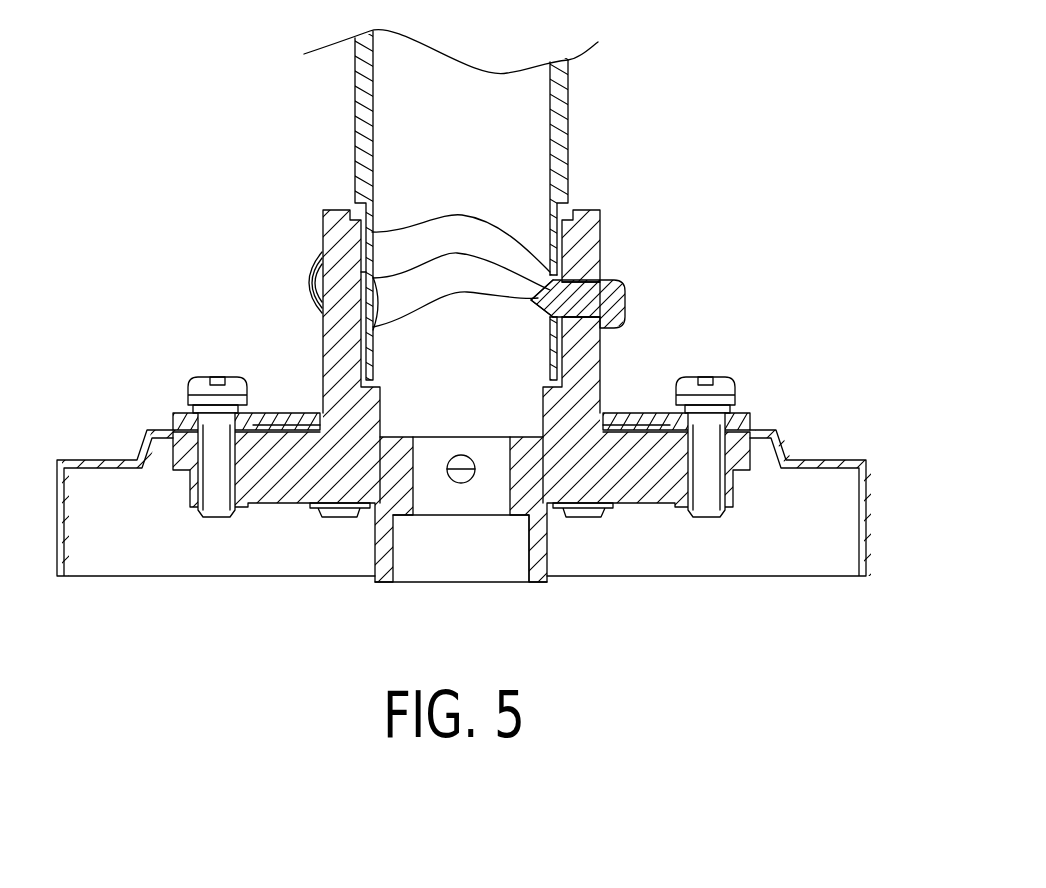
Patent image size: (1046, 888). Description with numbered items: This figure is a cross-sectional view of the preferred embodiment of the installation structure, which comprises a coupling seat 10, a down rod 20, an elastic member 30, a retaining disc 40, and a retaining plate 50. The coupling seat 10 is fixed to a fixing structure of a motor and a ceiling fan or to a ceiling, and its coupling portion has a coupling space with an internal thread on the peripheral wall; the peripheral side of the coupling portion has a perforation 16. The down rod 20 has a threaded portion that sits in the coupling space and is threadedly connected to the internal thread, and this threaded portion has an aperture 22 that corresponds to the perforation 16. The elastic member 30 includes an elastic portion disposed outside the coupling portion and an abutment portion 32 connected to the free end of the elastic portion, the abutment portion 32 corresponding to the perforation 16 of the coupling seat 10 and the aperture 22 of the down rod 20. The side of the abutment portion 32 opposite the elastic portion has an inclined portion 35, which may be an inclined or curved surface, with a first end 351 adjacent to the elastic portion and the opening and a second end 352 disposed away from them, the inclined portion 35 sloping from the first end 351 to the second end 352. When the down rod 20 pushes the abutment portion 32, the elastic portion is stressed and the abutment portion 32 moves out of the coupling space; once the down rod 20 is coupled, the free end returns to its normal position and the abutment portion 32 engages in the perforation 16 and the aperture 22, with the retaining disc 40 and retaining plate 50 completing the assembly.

The coupling seat 10 is at (610, 221).
The perforation 16 is at (582, 322).
The down rod 20 is at (575, 91).
The aperture 22 is at (565, 263).
The elastic member 30 is at (636, 312).
The abutment portion 32 is at (568, 300).
The inclined portion 35 is at (322, 284).
The first end 351 is at (372, 232).
The second end 352 is at (373, 327).
The retaining disc 40 is at (100, 448).
The retaining plate 50 is at (178, 400).